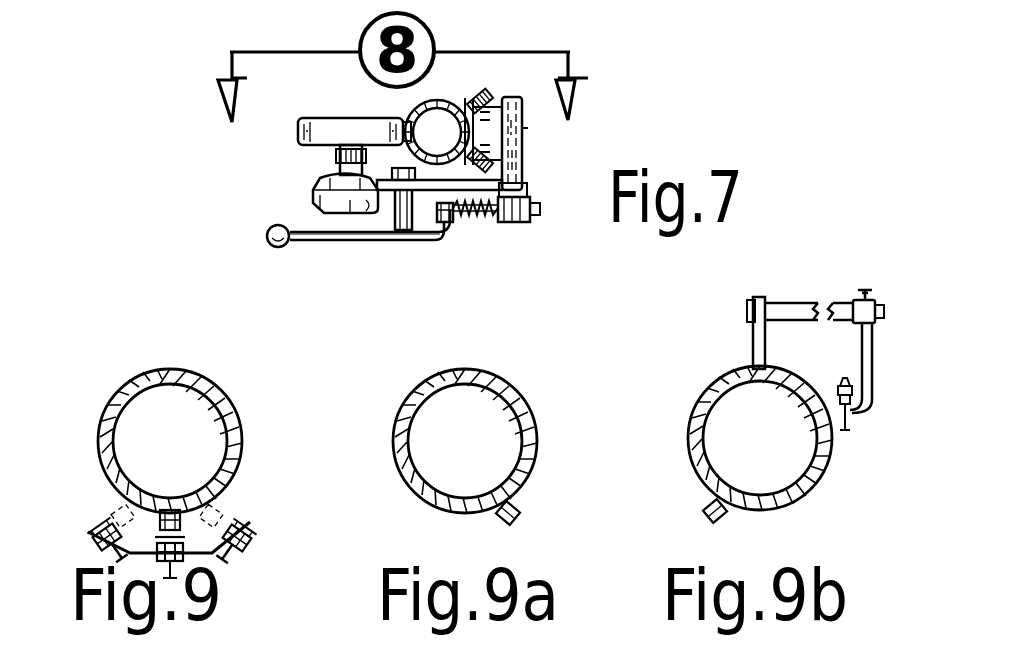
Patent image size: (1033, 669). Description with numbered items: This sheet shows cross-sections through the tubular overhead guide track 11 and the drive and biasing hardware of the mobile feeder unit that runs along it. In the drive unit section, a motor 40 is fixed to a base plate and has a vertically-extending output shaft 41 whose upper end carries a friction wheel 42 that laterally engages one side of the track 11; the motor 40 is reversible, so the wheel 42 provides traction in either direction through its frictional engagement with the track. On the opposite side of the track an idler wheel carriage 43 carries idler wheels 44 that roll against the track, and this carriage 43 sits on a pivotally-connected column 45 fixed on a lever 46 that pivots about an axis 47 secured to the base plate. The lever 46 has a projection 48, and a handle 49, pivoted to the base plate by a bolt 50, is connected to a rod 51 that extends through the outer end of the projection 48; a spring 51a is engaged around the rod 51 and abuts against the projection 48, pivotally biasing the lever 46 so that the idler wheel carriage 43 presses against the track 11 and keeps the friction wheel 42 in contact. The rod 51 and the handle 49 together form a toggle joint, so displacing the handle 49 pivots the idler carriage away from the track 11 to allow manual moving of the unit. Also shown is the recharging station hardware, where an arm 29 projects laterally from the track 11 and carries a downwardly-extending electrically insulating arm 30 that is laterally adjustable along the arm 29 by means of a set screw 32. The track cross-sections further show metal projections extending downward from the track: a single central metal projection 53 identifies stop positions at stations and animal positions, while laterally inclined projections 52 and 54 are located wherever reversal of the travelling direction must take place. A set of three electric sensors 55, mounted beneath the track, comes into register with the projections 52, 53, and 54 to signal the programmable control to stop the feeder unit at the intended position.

In FIG. 7, the overhead guide track 11 is at (410, 110).
In FIG. 9, the overhead guide track 11 is at (215, 450).
In FIG. 9A, the overhead guide track 11 is at (520, 455).
In FIG. 9B, the overhead guide track 11 is at (823, 443).
In FIG. 9B, the arm 29 is at (792, 305).
In FIG. 9B, the electrically insulating arm 30 is at (870, 338).
In FIG. 9B, the set screw 32 is at (866, 287).
In FIG. 7, the motor 40 is at (343, 248).
In FIG. 7, the output shaft 41 is at (338, 172).
In FIG. 7, the friction wheel 42 is at (310, 115).
In FIG. 7, the idler wheel carriage 43 is at (492, 96).
In FIG. 7, the idler wheels 44 is at (427, 100).
In FIG. 7, the column 45 is at (524, 127).
In FIG. 7, the lever 46 is at (522, 155).
In FIG. 7, the axis 47 is at (512, 222).
In FIG. 7, the projection 48 is at (532, 200).
In FIG. 7, the handle 49 is at (305, 242).
In FIG. 7, the bolt 50 is at (343, 157).
In FIG. 7, the rod 51 is at (465, 223).
In FIG. 7, the spring 51a is at (482, 222).
In FIG. 9B, the laterally inclined metal projection 52 is at (725, 515).
In FIG. 9, the central metal projection 53 is at (155, 497).
In FIG. 9A, the laterally inclined metal projection 54 is at (517, 527).
In FIG. 9, the electric sensors 55 is at (120, 517).